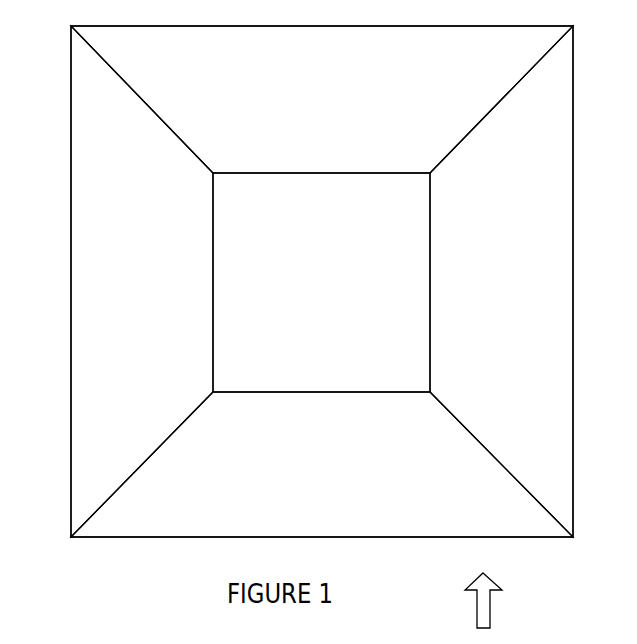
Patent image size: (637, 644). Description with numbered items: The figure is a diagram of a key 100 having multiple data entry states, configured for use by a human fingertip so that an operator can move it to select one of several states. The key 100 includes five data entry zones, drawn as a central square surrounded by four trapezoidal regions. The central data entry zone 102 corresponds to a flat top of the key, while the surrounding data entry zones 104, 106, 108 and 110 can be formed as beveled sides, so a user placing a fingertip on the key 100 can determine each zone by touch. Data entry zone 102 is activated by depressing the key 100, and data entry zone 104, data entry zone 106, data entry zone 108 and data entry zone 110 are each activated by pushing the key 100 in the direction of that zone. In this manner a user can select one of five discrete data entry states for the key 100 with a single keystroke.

The key 100 is at (322, 327).
The data entry zone 102 is at (321, 282).
The data entry zone 104 is at (142, 281).
The data entry zone 106 is at (322, 99).
The data entry zone 108 is at (501, 281).
The data entry zone 110 is at (322, 464).